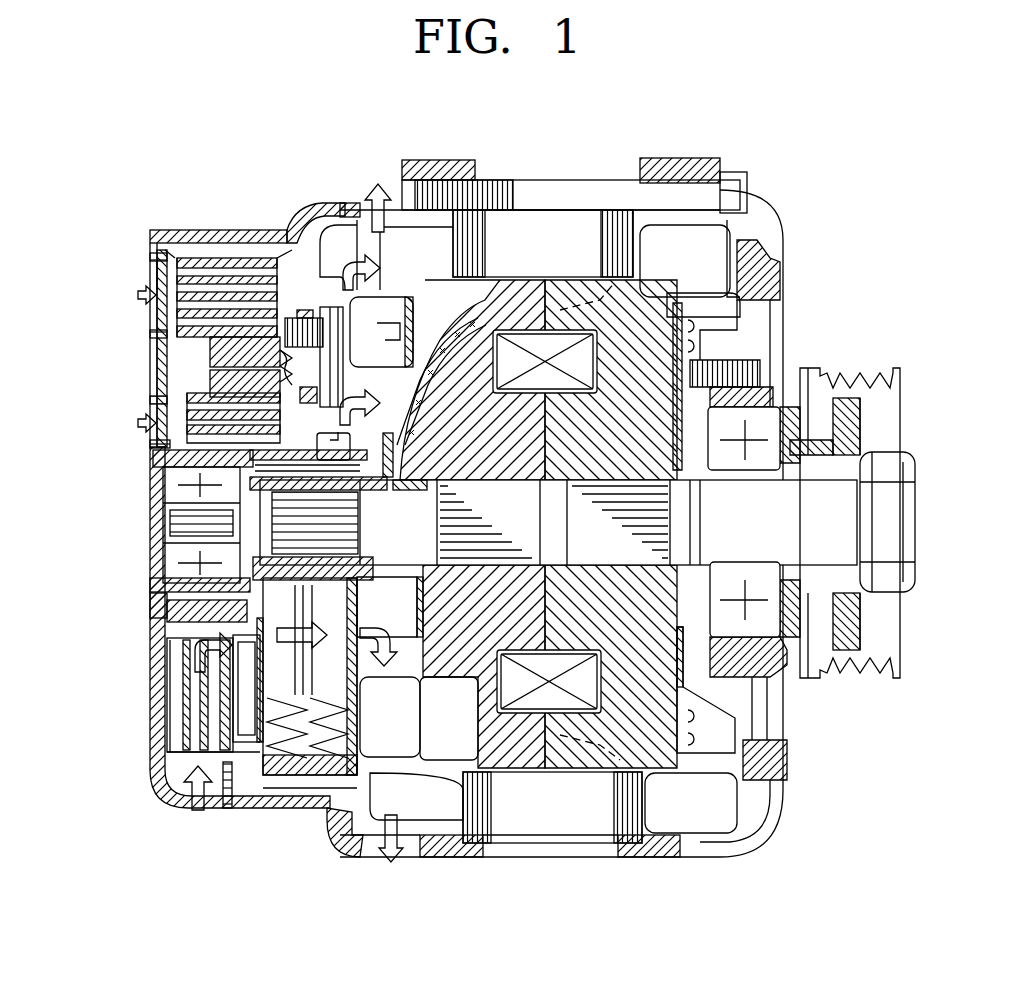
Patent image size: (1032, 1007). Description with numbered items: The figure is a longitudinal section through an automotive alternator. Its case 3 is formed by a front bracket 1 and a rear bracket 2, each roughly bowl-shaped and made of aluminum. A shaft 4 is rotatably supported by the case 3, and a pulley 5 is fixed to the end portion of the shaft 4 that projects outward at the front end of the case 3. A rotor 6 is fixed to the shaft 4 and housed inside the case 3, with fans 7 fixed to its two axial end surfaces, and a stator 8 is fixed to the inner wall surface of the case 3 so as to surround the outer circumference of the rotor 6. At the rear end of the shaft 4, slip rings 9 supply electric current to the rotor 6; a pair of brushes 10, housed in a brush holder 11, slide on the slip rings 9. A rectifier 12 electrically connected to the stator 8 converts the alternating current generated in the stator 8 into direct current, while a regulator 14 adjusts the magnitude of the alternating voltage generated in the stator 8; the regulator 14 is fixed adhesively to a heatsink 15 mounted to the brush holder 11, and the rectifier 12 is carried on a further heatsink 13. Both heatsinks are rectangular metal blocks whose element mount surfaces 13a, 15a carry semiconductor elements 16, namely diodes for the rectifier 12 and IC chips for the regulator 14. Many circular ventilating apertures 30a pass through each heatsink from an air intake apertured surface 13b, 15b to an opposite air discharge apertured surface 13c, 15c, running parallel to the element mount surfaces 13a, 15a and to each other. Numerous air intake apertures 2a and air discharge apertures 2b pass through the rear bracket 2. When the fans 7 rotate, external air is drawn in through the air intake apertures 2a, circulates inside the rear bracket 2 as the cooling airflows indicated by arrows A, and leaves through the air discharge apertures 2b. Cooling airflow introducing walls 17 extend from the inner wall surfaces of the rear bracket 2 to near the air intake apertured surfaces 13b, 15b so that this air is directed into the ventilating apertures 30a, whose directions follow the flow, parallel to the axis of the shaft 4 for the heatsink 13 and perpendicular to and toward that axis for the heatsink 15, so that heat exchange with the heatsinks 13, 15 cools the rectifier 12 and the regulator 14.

The front bracket 1 is at (787, 268).
The rear bracket 2 is at (305, 203).
The air intake apertures 2a is at (150, 278).
The air discharge apertures 2b is at (362, 208).
The case 3 is at (786, 212).
The shaft 4 is at (813, 482).
The pulley 5 is at (882, 678).
The rotor 6 is at (663, 288).
The fans 7 is at (720, 330).
The stator 8 is at (543, 183).
The slip rings 9 is at (255, 545).
The brushes 10 is at (180, 585).
The brush holder 11 is at (297, 790).
The rectifier 12 is at (195, 360).
The heatsink 13 is at (214, 255).
The element mount surface 13a is at (150, 317).
The air intake apertured surface 13b is at (165, 250).
The air discharge apertured surface 13c is at (292, 250).
The regulator 14 is at (245, 750).
The heatsink 15 is at (170, 645).
The element mount surface 15a is at (240, 690).
The air intake apertured surface 15b is at (167, 758).
The air discharge apertured surface 15c is at (180, 622).
The semiconductor elements 16 is at (215, 380).
The cooling airflow introducing walls 17 is at (155, 253).
The ventilating apertures 30a is at (150, 288).
The arrows (cooling airflows) A is at (198, 818).